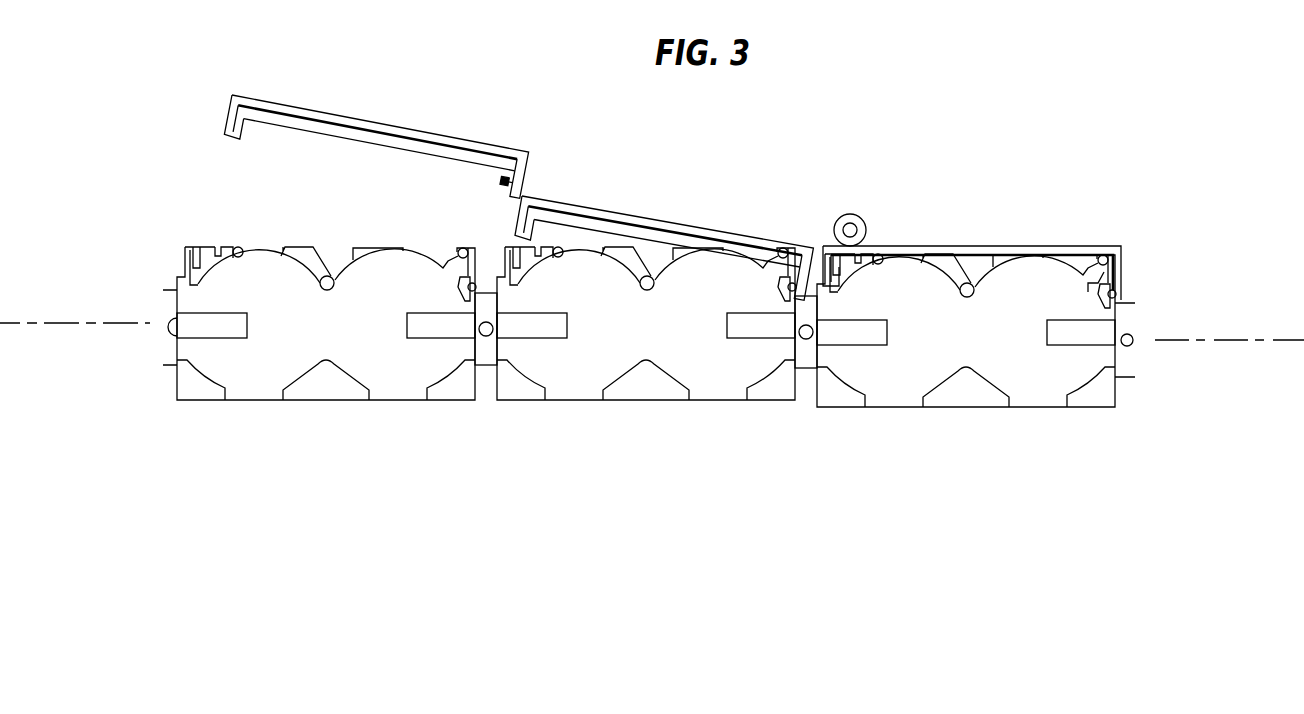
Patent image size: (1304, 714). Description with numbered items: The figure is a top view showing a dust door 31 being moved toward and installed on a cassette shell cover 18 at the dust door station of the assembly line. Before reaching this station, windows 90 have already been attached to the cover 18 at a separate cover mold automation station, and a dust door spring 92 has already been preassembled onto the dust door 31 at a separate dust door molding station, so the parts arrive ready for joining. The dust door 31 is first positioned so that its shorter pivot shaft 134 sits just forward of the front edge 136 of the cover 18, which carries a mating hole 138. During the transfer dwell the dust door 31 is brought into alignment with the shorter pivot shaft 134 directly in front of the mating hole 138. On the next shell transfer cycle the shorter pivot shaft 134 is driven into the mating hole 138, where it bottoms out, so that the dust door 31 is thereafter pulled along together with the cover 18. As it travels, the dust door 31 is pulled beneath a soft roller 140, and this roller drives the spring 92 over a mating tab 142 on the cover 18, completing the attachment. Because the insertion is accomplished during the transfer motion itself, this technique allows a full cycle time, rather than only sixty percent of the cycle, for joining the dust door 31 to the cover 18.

The cover 18 is at (253, 383).
The dust door 31 is at (393, 123).
The windows 90 is at (240, 322).
The dust door spring 92 is at (239, 142).
The shorter pivot shaft 134 is at (500, 183).
The front edge 136 is at (465, 251).
The mating hole 138 is at (458, 278).
The soft roller 140 is at (855, 214).
The mating tab 142 is at (192, 248).